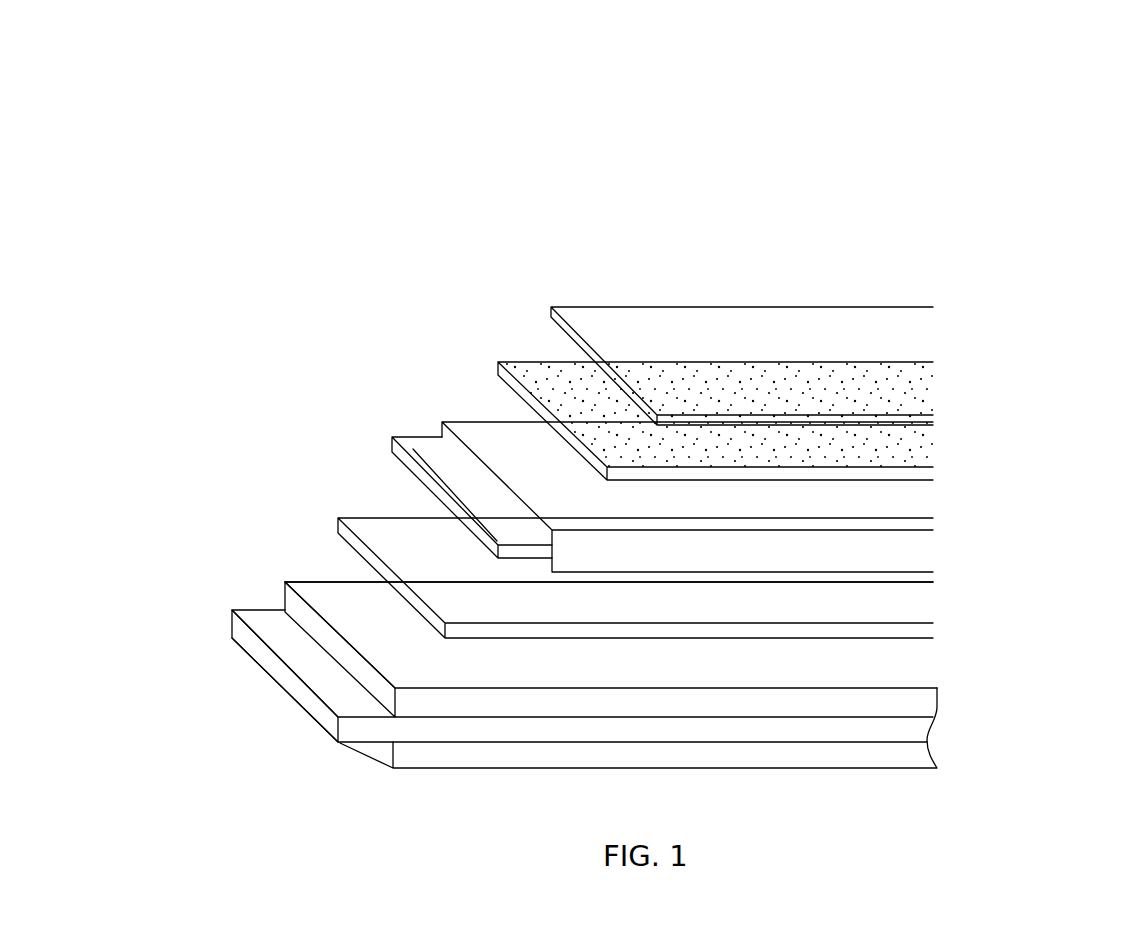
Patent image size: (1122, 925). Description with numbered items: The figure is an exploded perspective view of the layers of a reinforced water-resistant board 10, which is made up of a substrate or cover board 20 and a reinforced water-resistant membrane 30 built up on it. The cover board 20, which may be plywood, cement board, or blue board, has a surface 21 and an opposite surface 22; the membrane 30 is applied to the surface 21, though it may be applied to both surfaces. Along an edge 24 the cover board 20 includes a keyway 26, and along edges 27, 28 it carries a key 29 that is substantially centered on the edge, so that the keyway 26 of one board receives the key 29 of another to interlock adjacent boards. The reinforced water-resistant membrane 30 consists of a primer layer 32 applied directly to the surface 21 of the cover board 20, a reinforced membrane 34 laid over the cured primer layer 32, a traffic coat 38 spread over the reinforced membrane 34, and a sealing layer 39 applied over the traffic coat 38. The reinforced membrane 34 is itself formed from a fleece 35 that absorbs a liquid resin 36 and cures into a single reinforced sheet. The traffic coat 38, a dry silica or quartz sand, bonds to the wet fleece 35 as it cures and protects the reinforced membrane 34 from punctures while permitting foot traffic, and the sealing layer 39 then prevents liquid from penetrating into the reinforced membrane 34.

The reinforced water-resistant board 10 is at (928, 100).
The cover board 20 is at (581, 655).
The surface 21 is at (375, 627).
The surface 22 is at (395, 768).
The edge 24 is at (905, 703).
The keyway 26 is at (903, 728).
The edge 27 is at (300, 679).
The edge 28 is at (318, 582).
The key 29 is at (300, 693).
The reinforced water-resistant membrane 30 is at (574, 341).
The primer layer 32 is at (415, 563).
The reinforced membrane 34 is at (562, 386).
The fleece 35 is at (457, 472).
The liquid resin 36 is at (537, 477).
The traffic coat 38 is at (575, 397).
The sealing layer 39 is at (642, 353).